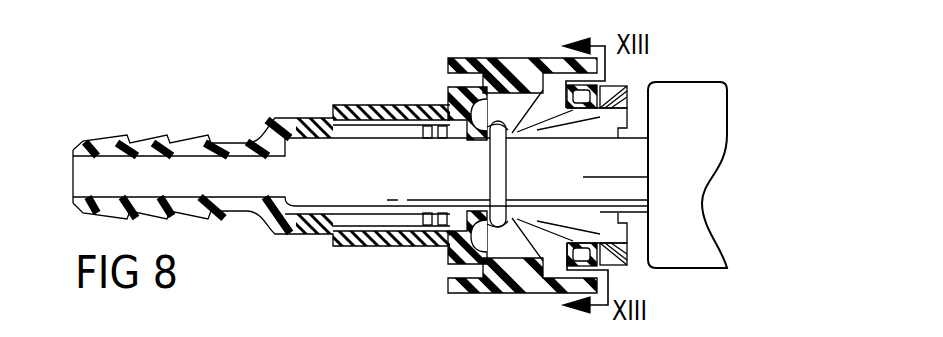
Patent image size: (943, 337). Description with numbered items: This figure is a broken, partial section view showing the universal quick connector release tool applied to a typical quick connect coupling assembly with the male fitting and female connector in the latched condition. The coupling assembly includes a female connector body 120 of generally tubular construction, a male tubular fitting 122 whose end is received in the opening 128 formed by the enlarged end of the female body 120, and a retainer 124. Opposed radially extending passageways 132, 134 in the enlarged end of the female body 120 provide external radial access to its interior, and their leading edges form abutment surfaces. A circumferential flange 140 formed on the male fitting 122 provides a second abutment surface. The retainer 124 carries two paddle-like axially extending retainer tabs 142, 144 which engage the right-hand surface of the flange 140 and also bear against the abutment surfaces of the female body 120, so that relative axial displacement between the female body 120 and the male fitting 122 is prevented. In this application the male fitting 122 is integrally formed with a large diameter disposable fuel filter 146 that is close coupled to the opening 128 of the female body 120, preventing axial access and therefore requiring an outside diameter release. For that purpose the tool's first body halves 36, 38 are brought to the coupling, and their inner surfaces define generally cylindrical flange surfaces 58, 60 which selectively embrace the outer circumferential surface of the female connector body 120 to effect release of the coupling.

The first body half 36 is at (493, 62).
The first body half 38 is at (475, 289).
The cylindrical flange surface 58 is at (452, 268).
The cylindrical flange surface 60 is at (450, 86).
The female connector body 120 is at (292, 118).
The male tubular fitting 122 is at (340, 190).
The retainer 124 is at (612, 88).
The opening 128 is at (590, 135).
The radially extending passageway 132 is at (558, 78).
The radially extending passageway 134 is at (558, 268).
The circumferential flange 140 is at (490, 160).
The retainer tab 142 is at (527, 118).
The retainer tab 144 is at (537, 228).
The disposable fuel filter 146 is at (712, 107).